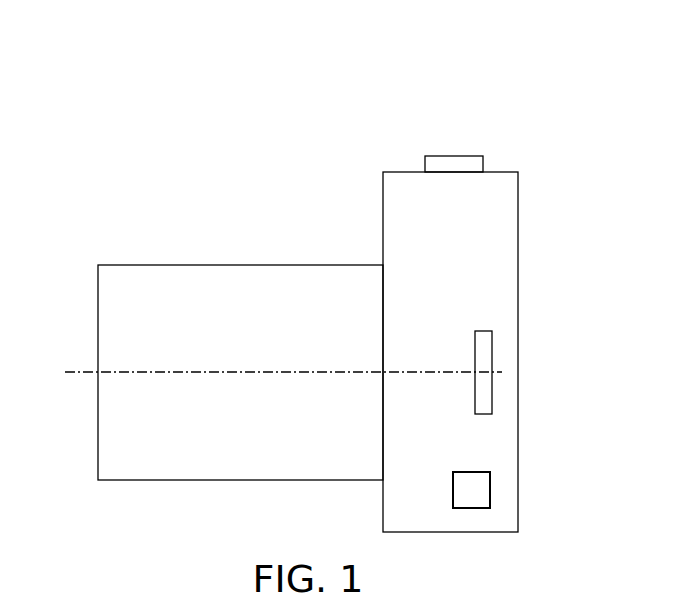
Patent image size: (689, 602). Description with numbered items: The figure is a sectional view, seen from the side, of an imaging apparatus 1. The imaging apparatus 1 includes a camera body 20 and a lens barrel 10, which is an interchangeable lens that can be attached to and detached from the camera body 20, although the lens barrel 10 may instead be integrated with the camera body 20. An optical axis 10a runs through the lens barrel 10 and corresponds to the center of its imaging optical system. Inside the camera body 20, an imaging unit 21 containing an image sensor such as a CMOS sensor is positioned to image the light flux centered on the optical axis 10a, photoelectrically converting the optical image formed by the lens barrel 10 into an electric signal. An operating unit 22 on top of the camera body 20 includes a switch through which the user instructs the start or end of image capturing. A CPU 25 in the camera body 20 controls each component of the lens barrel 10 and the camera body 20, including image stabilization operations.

The imaging apparatus 1 is at (420, 88).
The lens barrel 10 is at (282, 272).
The optical axis 10a is at (88, 372).
The camera body 20 is at (417, 188).
The imaging unit 21 is at (484, 355).
The operating unit 22 is at (458, 163).
The CPU 25 is at (490, 490).